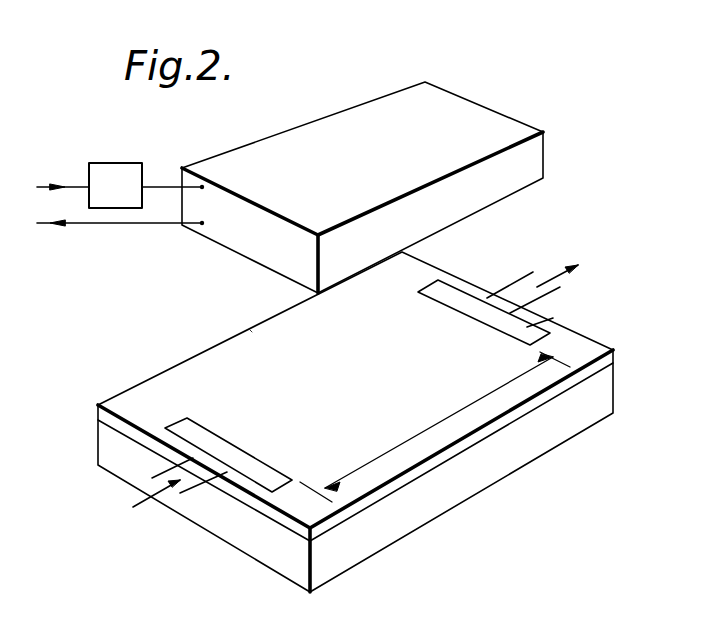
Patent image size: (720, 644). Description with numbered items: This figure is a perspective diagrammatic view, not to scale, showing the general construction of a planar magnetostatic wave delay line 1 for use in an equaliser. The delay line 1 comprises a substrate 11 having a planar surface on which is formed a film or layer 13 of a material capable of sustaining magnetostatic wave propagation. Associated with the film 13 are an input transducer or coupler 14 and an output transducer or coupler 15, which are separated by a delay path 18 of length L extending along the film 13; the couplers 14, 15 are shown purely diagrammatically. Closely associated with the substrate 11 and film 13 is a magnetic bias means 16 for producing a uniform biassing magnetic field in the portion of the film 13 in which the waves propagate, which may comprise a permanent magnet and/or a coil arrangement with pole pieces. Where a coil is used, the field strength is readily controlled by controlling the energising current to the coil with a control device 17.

The delay line 1 is at (593, 227).
The substrate 11 is at (265, 552).
The film 13 is at (608, 363).
The input transducer 14 is at (190, 436).
The output transducer 15 is at (560, 312).
The magnetic bias means 16 is at (323, 128).
The control device 17 is at (113, 173).
The delay path 18 is at (253, 362).